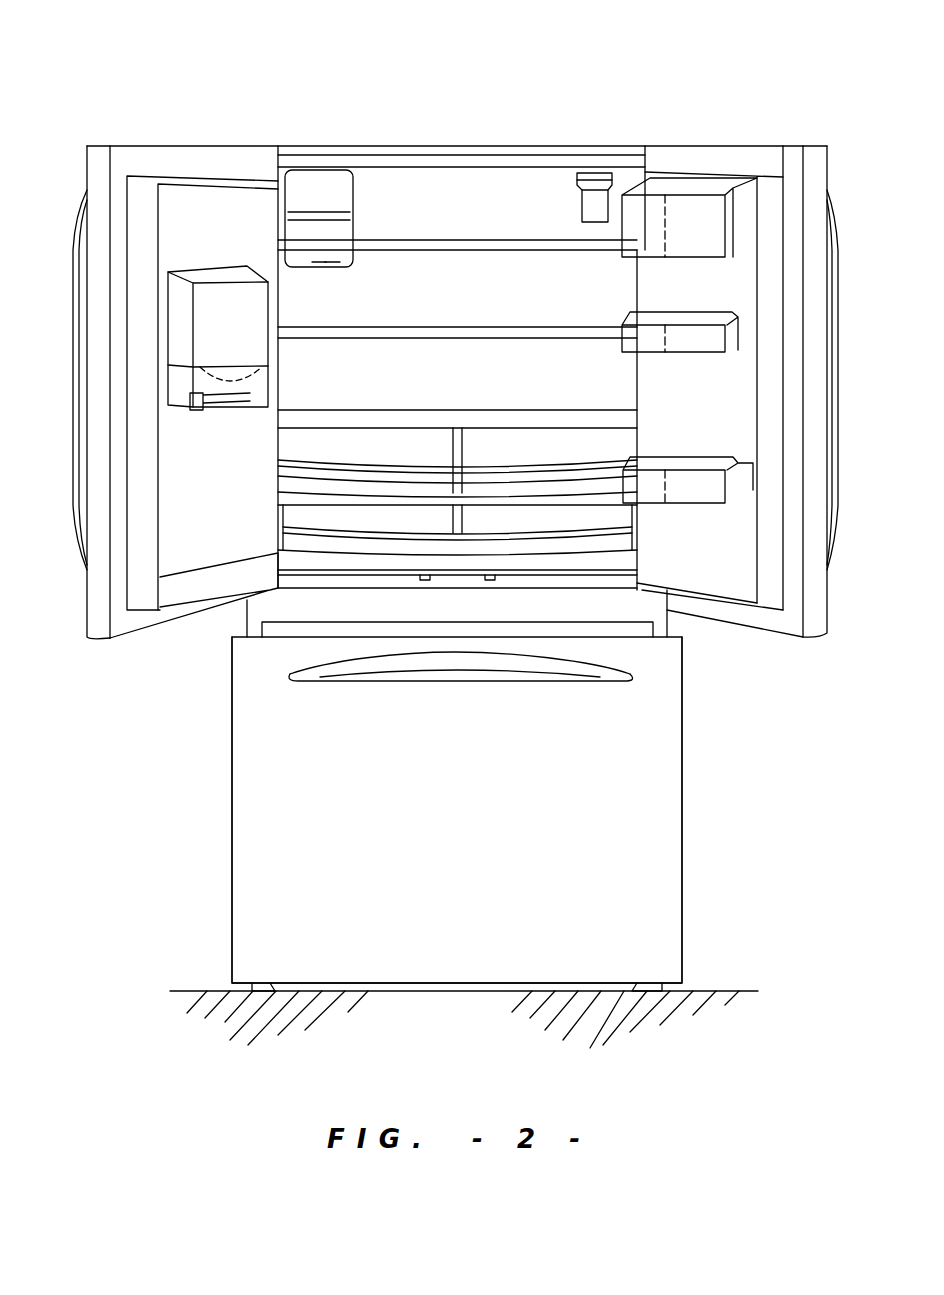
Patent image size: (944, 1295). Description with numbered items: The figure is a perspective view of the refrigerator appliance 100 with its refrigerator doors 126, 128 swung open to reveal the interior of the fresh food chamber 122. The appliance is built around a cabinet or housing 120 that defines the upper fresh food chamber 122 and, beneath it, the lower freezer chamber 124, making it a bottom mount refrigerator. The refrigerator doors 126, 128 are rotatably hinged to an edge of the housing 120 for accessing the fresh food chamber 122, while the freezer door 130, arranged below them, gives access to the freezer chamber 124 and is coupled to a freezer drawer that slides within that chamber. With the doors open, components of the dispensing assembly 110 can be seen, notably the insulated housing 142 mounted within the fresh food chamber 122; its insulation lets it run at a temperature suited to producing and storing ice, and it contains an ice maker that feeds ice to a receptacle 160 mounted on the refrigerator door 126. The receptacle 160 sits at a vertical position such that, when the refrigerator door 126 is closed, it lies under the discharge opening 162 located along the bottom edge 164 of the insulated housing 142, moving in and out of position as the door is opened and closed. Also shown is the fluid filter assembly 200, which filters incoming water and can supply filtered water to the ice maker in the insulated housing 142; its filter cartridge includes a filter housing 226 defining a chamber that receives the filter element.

The refrigerator appliance 100 is at (660, 97).
The dispensing assembly 110 is at (265, 222).
The housing 120 is at (230, 885).
The fresh food chamber 122 is at (453, 201).
The freezer chamber 124 is at (643, 753).
The refrigerator door 126 is at (138, 147).
The refrigerator door 128 is at (725, 145).
The freezer door 130 is at (643, 858).
The insulated housing 142 is at (318, 203).
The receptacle 160 is at (218, 302).
The discharge opening 162 is at (330, 268).
The bottom edge 164 is at (320, 270).
The fluid filter assembly 200 is at (572, 198).
The filter housing 226 is at (580, 212).